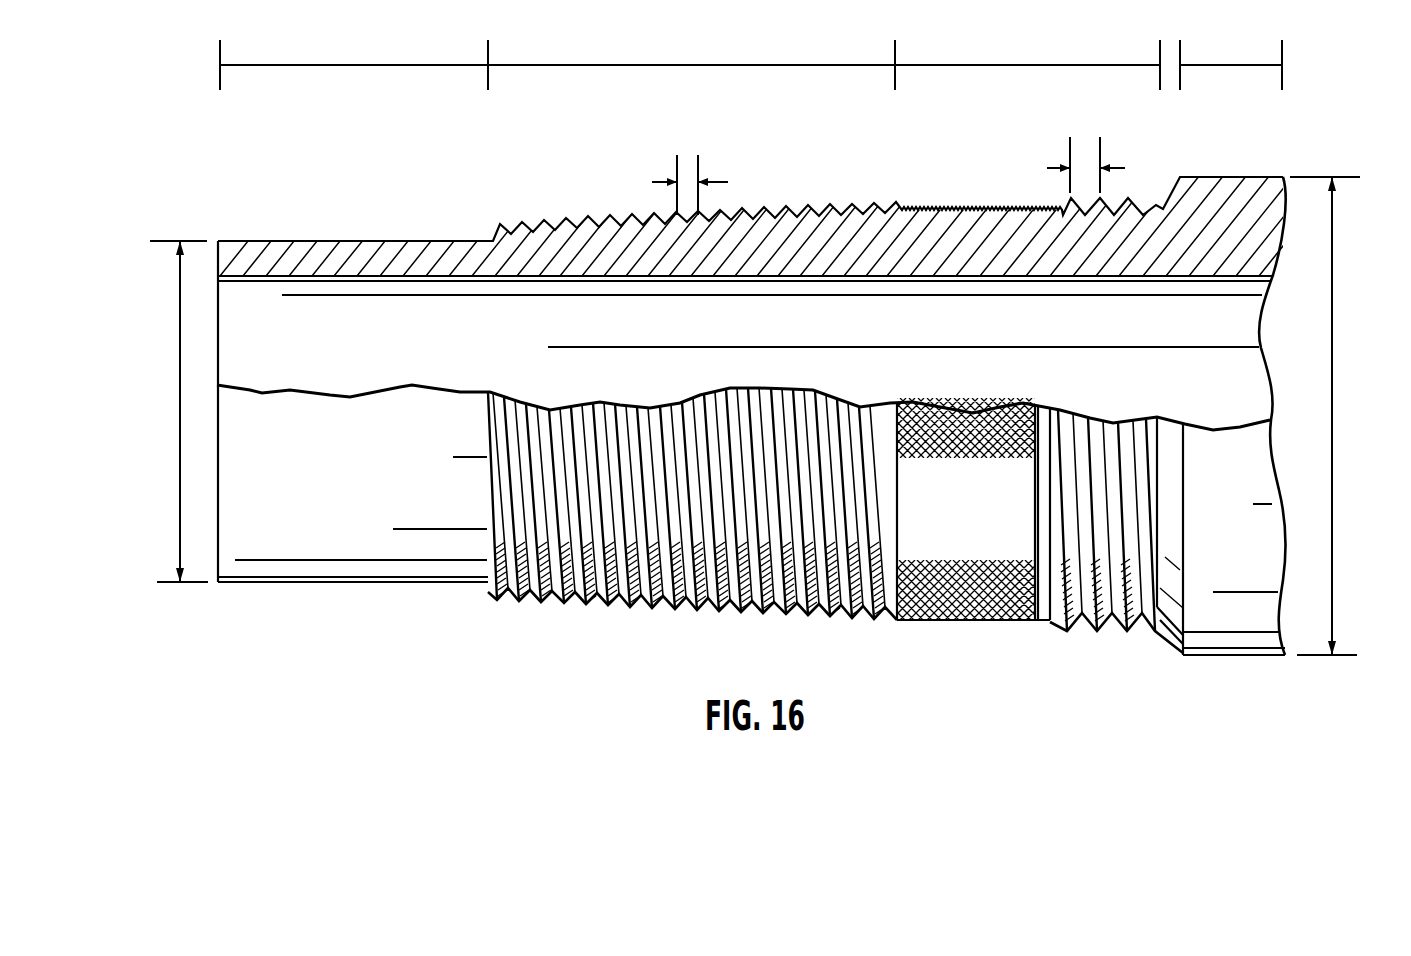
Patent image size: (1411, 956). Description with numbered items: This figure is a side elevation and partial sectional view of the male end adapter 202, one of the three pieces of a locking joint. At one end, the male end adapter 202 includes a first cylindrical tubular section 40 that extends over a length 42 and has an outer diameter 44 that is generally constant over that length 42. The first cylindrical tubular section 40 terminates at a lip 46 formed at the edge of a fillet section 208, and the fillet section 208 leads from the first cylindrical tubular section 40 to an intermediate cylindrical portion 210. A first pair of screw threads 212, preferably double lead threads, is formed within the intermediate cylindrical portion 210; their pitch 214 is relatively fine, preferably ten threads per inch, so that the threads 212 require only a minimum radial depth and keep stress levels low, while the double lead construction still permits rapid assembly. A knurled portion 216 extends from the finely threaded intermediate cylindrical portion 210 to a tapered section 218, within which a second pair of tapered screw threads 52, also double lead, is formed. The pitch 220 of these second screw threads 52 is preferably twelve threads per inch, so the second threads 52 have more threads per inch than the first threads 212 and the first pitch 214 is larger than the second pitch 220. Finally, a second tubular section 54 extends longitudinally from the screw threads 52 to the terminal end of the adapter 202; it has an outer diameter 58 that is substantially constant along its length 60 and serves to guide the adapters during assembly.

The male end adapter 202 is at (252, 208).
The length of second tubular section 60 is at (354, 59).
The tapered section 218 is at (691, 59).
The intermediate cylindrical portion 210 is at (1027, 59).
The length of first cylindrical tubular section 42 is at (1231, 59).
The pitch of second screw threads 220 is at (689, 180).
The pitch of first screw threads 214 is at (1086, 167).
The outer diameter of second tubular section 58 is at (178, 380).
The outer diameter of first cylindrical tubular section 44 is at (1333, 440).
The second tubular section 54 is at (218, 584).
The second pair of tapered screw threads 52 is at (632, 604).
The knurled portion 216 is at (968, 622).
The first pair of screw threads 212 is at (1066, 633).
The fillet section 208 is at (1167, 637).
The lip 46 is at (1183, 660).
The first cylindrical tubular section 40 is at (1267, 657).